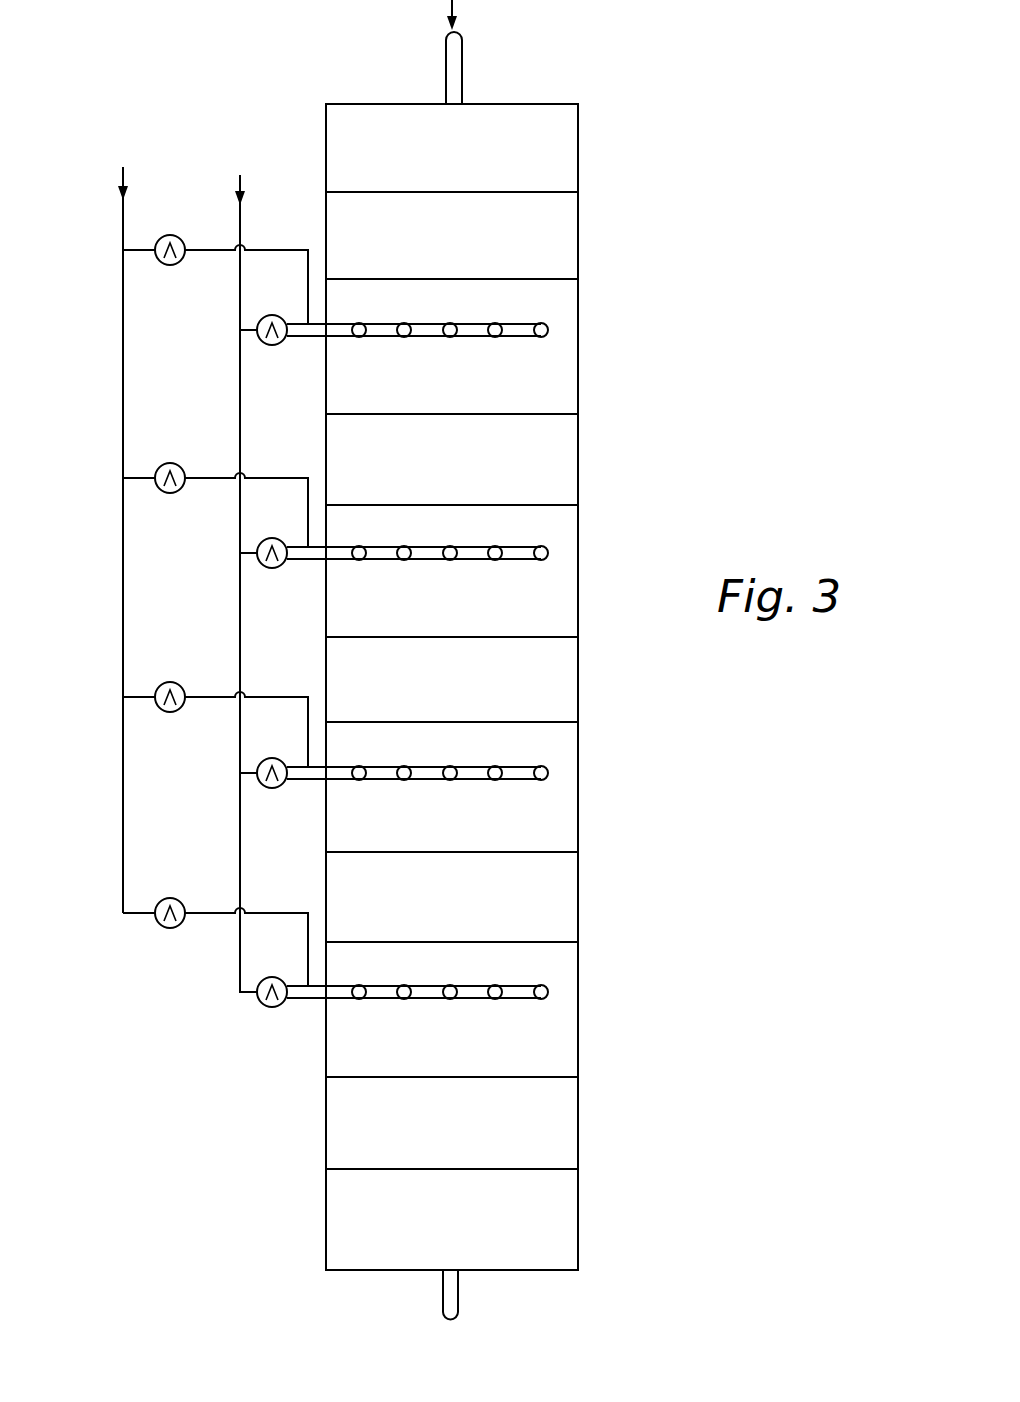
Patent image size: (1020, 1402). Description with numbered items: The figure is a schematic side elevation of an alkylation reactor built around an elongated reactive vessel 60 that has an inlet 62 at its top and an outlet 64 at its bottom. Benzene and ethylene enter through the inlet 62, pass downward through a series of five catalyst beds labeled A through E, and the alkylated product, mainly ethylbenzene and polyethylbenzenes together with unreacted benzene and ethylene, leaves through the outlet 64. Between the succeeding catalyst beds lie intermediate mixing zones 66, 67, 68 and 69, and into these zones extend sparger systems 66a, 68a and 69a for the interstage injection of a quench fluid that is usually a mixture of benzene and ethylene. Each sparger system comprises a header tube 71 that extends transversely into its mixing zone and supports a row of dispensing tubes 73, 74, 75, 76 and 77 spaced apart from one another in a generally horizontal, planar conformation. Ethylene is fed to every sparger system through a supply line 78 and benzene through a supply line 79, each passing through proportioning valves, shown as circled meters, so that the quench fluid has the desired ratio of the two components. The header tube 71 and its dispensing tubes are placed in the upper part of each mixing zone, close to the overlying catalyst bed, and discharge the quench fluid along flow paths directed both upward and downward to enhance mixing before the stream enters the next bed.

The elongated reactive vessel 60 is at (582, 160).
The inlet 62 is at (462, 60).
The outlet 64 is at (469, 727).
The intermediate mixing zone 66 is at (452, 346).
The sparger system 66a is at (551, 321).
The intermediate mixing zone 67 is at (432, 591).
The intermediate mixing zone 68 is at (452, 787).
The sparger system 68a is at (552, 763).
The intermediate mixing zone 69 is at (452, 1009).
The sparger system 69a is at (555, 983).
The header tube 71 is at (308, 340).
The dispensing tube 73 is at (360, 338).
The dispensing tube 74 is at (403, 338).
The dispensing tube 75 is at (450, 338).
The dispensing tube 76 is at (496, 338).
The dispensing tube 77 is at (542, 338).
The supply line 78 is at (238, 210).
The supply line 79 is at (123, 225).